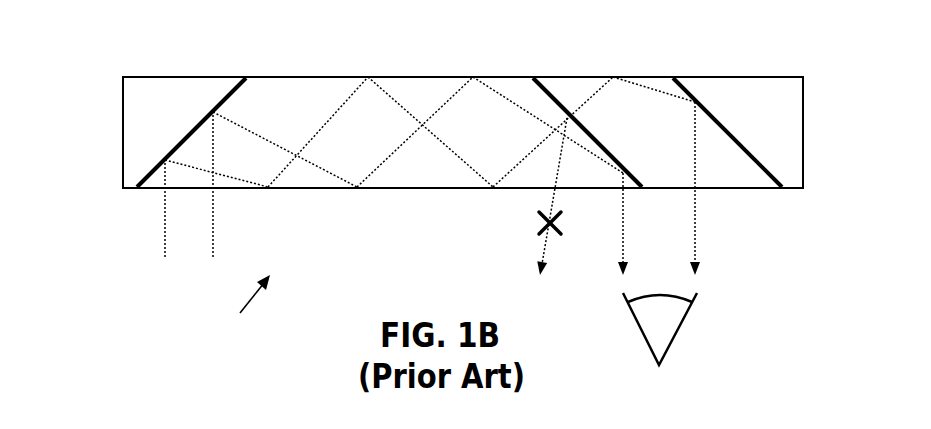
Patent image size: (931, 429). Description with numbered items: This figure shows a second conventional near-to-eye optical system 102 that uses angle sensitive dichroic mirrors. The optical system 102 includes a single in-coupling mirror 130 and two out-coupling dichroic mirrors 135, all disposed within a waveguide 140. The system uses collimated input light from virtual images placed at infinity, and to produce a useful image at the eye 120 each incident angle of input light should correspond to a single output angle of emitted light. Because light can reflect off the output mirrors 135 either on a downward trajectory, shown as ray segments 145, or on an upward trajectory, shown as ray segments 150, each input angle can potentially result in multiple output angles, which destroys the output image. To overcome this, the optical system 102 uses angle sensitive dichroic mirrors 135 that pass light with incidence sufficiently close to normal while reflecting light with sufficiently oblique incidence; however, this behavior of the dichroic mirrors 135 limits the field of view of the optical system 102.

The near-to-eye optical system 102 is at (242, 305).
The eye 120 is at (677, 332).
The in-coupling mirror 130 is at (190, 130).
The out-coupling dichroic mirrors 135 is at (560, 98).
The waveguide 140 is at (297, 77).
The ray segments 145 is at (492, 88).
The ray segments 150 is at (532, 153).